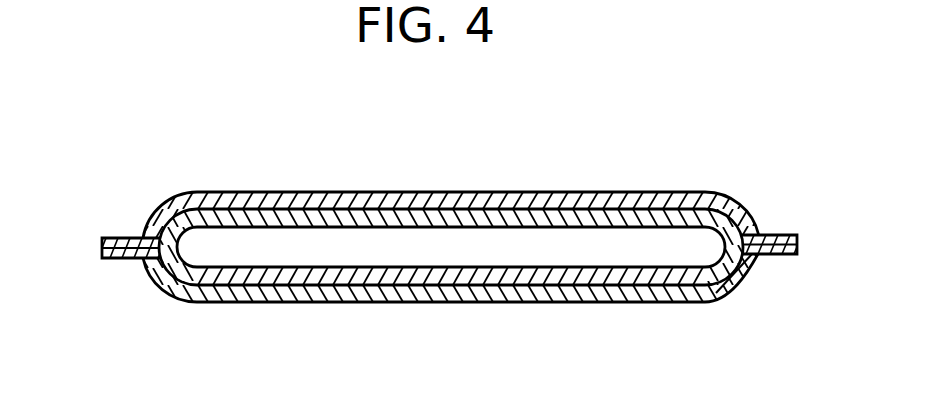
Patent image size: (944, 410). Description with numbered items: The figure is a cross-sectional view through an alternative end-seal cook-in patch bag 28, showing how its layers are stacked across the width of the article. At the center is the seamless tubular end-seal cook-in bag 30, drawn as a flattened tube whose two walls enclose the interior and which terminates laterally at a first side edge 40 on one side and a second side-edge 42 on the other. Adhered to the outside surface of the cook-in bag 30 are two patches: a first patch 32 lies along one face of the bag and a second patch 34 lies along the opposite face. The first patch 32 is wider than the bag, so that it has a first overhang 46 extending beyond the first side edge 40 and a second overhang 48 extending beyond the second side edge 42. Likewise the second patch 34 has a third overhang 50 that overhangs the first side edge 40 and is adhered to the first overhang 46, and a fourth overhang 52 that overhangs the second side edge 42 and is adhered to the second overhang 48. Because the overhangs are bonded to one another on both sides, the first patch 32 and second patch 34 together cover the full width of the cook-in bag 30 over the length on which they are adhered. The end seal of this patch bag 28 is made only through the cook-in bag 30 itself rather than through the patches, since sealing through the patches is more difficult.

The cook-in patch bag 28 is at (312, 110).
The cook-in bag 30 is at (438, 214).
The first patch 32 is at (547, 192).
The second patch 34 is at (575, 303).
The first side edge 40 is at (178, 250).
The second side edge 42 is at (663, 225).
The first overhang 46 is at (120, 238).
The second overhang 48 is at (777, 236).
The third overhang 50 is at (115, 259).
The fourth overhang 52 is at (776, 255).